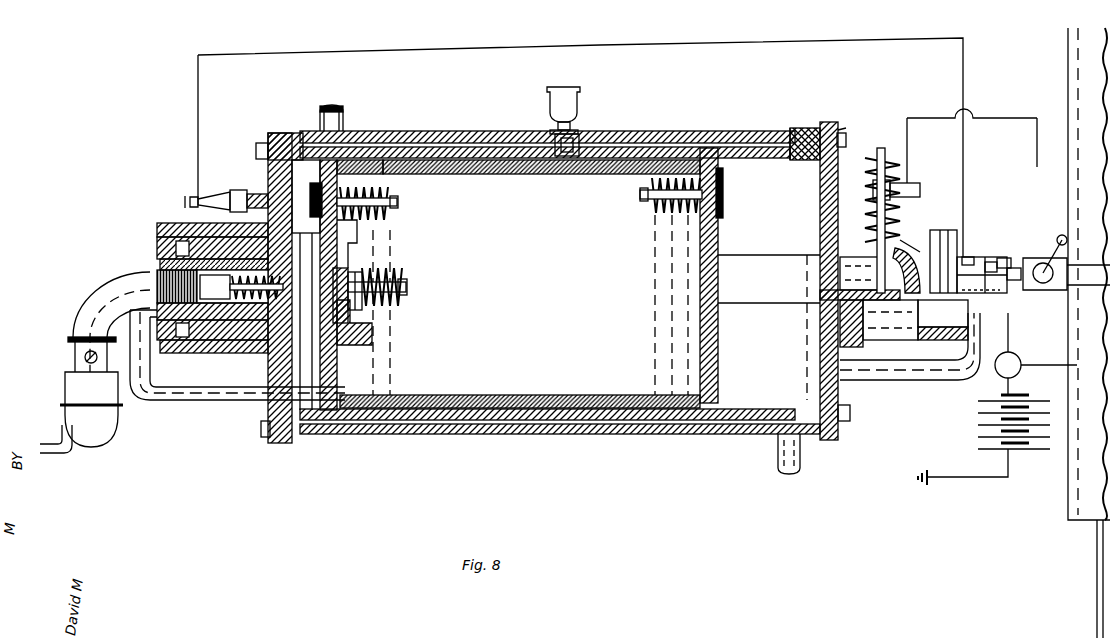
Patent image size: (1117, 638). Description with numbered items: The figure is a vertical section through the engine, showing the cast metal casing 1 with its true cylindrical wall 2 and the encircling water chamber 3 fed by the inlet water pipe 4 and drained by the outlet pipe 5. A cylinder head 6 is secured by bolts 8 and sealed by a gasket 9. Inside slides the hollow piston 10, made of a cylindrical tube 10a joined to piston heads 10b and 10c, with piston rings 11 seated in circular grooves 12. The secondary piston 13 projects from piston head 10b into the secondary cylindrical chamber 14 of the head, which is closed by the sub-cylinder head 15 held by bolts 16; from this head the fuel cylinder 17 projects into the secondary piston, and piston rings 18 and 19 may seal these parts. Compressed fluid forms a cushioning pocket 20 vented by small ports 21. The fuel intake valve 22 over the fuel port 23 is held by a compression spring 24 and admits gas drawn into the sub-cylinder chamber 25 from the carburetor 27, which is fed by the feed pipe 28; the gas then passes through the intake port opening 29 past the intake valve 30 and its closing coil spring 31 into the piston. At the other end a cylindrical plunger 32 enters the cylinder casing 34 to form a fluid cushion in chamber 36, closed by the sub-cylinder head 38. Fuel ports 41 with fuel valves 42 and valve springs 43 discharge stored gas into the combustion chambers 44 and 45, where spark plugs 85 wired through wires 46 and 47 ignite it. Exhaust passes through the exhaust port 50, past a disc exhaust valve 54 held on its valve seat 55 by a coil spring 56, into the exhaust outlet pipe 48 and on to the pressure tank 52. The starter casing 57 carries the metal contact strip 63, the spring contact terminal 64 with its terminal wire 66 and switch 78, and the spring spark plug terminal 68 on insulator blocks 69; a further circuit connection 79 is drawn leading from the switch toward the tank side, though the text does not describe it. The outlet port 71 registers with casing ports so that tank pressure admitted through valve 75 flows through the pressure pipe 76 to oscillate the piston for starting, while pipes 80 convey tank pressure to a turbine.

The casing 1 is at (470, 140).
The cylindrical wall 2 is at (790, 130).
The water chamber 3 is at (428, 135).
The inlet water pipe 4 is at (343, 118).
The outlet pipe 5 is at (800, 453).
The cylinder head 6 is at (268, 135).
The bolts 8 is at (256, 150).
The gasket 9 is at (283, 133).
The hollow piston 10 is at (525, 145).
The cylindrical tube 10a is at (634, 394).
The piston head 10b is at (342, 352).
The piston head 10c is at (700, 334).
The piston rings 11 is at (390, 317).
The circular grooves 12 is at (383, 180).
The secondary piston 13 is at (216, 356).
The secondary cylindrical chamber 14 is at (190, 200).
The sub-cylinder head 15 is at (185, 205).
The bolts 16 is at (157, 228).
The fuel cylinder 17 is at (226, 224).
The piston rings 18 is at (252, 352).
The piston rings 19 is at (199, 352).
The pocket 20 is at (176, 248).
The small ports 21 is at (160, 252).
The fuel intake valve 22 is at (338, 250).
The fuel port 23 is at (258, 356).
The compression spring 24 is at (228, 352).
The sub-cylinder chamber 25 is at (340, 258).
The carburetor 27 is at (62, 400).
The feed pipe 28 is at (56, 444).
The intake port opening 29 is at (352, 262).
The intake valve 30 is at (362, 275).
The closing coil spring 31 is at (372, 272).
The cylindrical plunger 32 is at (722, 257).
The cylinder casing 34 is at (905, 238).
The chamber 36 is at (915, 250).
The sub-cylinder head 38 is at (953, 232).
The fuel ports 41 is at (340, 158).
The fuel valves 42 is at (310, 195).
The valve springs 43 is at (397, 202).
The combustion chamber 44 is at (808, 128).
The combustion chamber 45 is at (300, 180).
The wire 46 is at (964, 95).
The wire 47 is at (1008, 116).
The exhaust outlet pipe 48 is at (985, 335).
The exhaust port 50 is at (820, 292).
The pressure tank 52 is at (1077, 498).
The disc exhaust valve 54 is at (890, 340).
The valve seat 55 is at (925, 340).
The coil spring 56 is at (846, 140).
The starter casing 57 is at (1056, 245).
The metal contact strip 63 is at (1002, 255).
The spring contact terminal 64 is at (1012, 266).
The terminal wire 66 is at (1010, 342).
The spring spark plug terminal 68 is at (972, 257).
The insulator blocks 69 is at (995, 260).
The outlet port 71 is at (1068, 249).
The valve 75 is at (1040, 262).
The pressure pipe 76 is at (932, 382).
The switch 78 is at (840, 132).
The conductor 79 is at (1052, 364).
The pipes 80 is at (1097, 540).
The spark plugs 85 is at (232, 197).